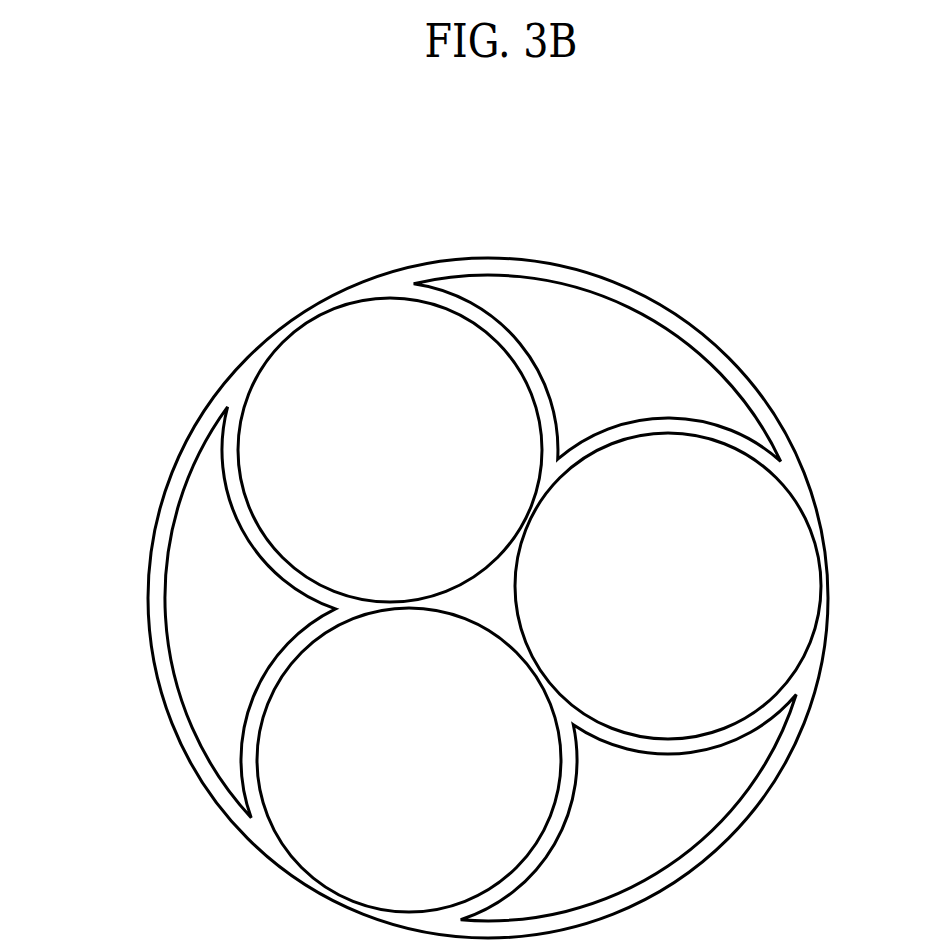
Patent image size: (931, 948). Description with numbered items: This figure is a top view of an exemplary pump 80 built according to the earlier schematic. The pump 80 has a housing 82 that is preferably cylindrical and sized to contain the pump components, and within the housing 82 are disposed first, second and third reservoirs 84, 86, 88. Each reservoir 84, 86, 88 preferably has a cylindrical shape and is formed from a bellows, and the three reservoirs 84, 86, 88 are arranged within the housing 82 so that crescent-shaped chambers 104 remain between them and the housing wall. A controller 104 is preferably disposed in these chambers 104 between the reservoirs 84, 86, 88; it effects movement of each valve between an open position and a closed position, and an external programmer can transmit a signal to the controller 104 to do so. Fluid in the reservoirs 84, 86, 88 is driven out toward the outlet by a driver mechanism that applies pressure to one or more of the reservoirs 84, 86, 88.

The pump 80 is at (235, 256).
The housing 82 is at (167, 492).
The first reservoir 84 is at (368, 467).
The second reservoir 86 is at (655, 598).
The third reservoir 88 is at (387, 778).
The controller 104 is at (237, 625).